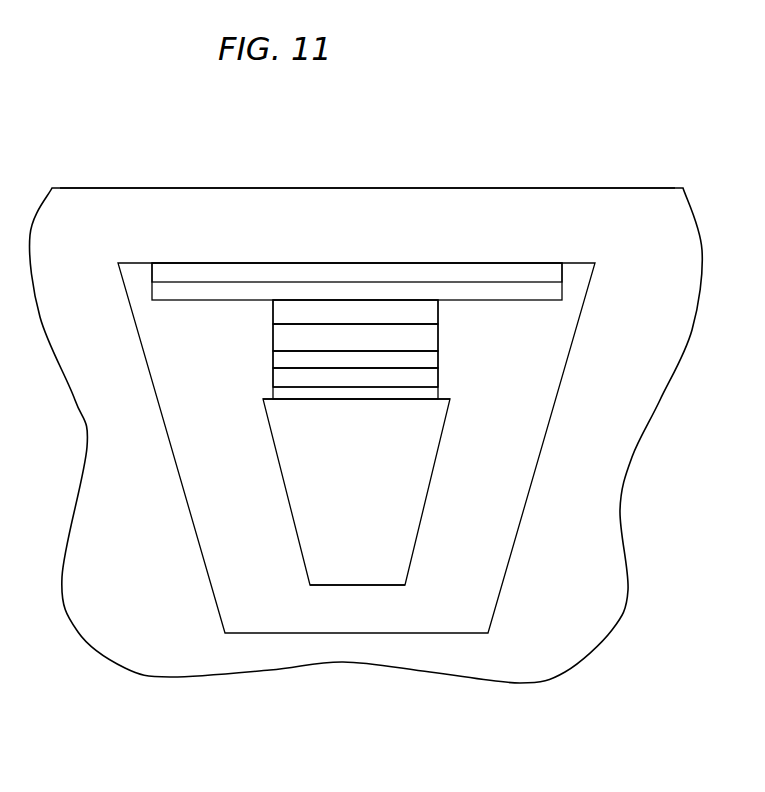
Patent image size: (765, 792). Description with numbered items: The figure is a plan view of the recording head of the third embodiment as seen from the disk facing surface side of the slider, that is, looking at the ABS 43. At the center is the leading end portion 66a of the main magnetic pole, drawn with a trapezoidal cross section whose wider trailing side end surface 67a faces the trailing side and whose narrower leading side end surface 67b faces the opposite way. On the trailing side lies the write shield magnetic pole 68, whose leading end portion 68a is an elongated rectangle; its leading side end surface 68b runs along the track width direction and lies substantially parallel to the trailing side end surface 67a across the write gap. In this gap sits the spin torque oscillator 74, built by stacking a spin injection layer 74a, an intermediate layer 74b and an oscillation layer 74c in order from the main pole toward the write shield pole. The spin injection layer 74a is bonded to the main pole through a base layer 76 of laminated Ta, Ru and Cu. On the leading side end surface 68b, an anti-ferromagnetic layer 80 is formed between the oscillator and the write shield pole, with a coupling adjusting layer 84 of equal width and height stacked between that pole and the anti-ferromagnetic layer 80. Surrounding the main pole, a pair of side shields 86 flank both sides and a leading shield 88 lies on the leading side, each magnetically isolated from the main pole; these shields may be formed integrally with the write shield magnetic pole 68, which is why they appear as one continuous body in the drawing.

The write shield magnetic pole 68 is at (258, 217).
The leading end portion of the write shield magnetic pole 68a is at (402, 210).
The leading side end surface 68b is at (198, 264).
The side shields 86 is at (100, 447).
The leading shield 88 is at (483, 660).
The ABS 43 is at (210, 500).
The anti-ferromagnetic layer 80 is at (553, 292).
The coupling adjusting layer 84 is at (553, 272).
The spin torque oscillator 74 is at (512, 325).
The spin injection layer 74a is at (438, 382).
The intermediate layer 74b is at (438, 361).
The oscillation layer 74c is at (438, 339).
The base layer 76 is at (298, 387).
The leading end portion of the main magnetic pole 66a is at (393, 546).
The trailing side end surface 67a is at (410, 387).
The leading side end surface 67b is at (380, 585).